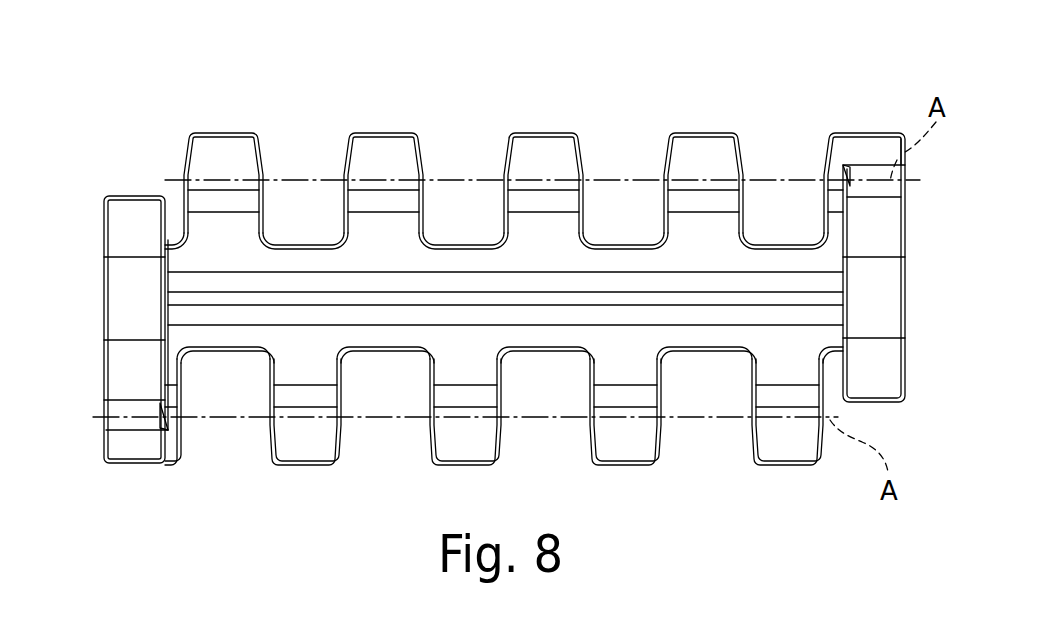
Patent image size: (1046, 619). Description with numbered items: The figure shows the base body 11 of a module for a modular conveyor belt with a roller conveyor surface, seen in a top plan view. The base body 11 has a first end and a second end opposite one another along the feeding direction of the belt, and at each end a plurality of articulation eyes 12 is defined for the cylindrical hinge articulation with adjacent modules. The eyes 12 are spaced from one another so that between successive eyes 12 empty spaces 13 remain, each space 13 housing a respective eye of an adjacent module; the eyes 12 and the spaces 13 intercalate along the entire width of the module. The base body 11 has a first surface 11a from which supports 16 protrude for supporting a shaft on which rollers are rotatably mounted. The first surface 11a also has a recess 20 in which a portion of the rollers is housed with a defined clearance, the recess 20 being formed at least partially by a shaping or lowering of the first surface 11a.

The base body 11 is at (791, 112).
The first surface 11a is at (487, 300).
The articulation eye 12 is at (210, 140).
The empty space 13 is at (297, 138).
The support 16 is at (116, 298).
The recess 20 is at (168, 278).